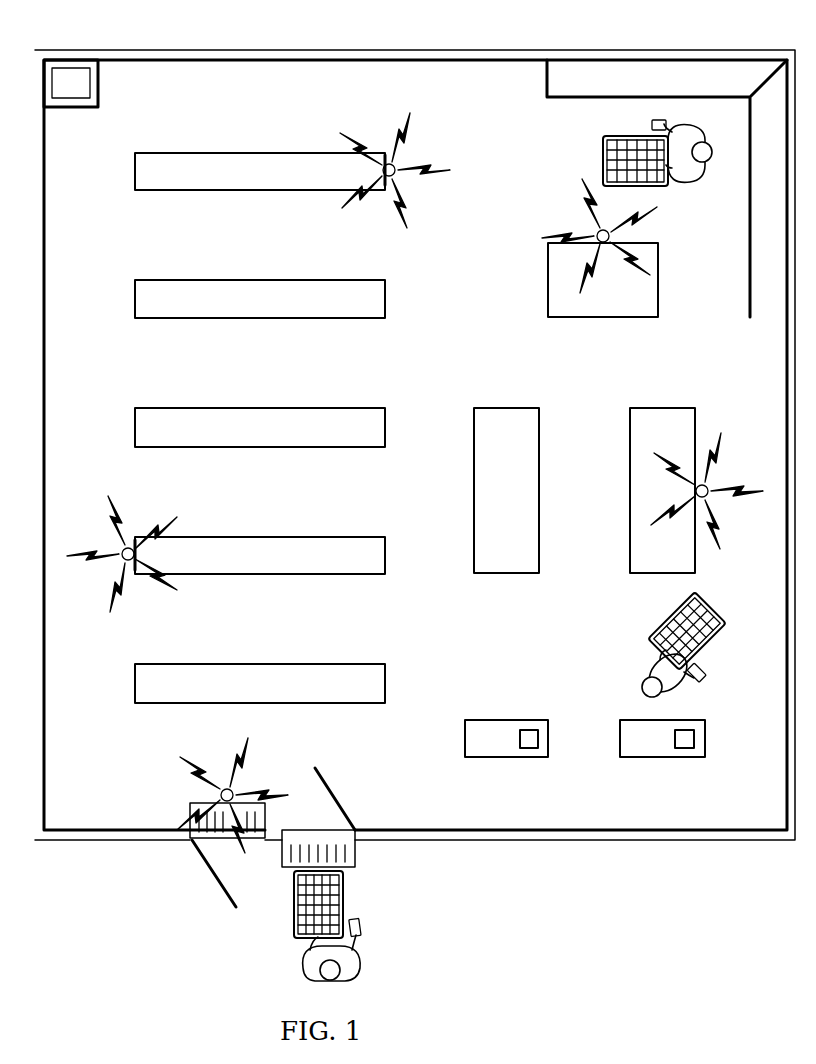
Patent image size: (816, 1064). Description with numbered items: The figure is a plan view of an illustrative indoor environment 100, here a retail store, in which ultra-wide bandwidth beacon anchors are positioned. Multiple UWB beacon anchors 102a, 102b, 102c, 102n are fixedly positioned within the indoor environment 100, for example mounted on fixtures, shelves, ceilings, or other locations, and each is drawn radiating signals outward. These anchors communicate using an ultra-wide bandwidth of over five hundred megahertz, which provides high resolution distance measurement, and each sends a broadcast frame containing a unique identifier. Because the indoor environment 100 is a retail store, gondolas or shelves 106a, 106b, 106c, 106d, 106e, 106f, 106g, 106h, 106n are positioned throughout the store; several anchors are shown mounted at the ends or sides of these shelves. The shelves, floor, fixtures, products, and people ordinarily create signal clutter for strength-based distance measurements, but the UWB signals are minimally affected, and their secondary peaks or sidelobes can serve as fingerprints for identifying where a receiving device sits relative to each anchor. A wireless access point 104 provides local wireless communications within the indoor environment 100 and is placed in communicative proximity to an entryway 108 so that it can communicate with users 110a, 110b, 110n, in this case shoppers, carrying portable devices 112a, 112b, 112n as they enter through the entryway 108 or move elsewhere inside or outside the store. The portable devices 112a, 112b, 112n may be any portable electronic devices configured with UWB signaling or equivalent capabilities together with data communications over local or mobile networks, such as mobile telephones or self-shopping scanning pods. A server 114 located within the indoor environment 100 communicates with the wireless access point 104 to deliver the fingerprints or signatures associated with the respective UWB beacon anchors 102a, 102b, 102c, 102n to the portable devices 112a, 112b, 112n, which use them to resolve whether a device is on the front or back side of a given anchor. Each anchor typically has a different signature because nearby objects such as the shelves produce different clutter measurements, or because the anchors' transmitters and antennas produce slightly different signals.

The indoor environment 100 is at (328, 82).
The UWB beacon anchor 102a is at (397, 166).
The UWB beacon anchor 102b is at (597, 231).
The UWB beacon anchor 102c is at (708, 484).
The UWB beacon anchor 102n is at (120, 558).
The wireless access point 104 is at (227, 788).
The shelf 106a is at (259, 158).
The shelf 106b is at (259, 285).
The shelf 106c is at (259, 413).
The shelf 106d is at (259, 542).
The shelf 106e is at (259, 670).
The shelf 106f is at (509, 415).
The shelf 106g is at (665, 415).
The shelf 106h is at (548, 278).
The shelf 106n is at (548, 78).
The entryway 108 is at (350, 766).
The user 110a is at (304, 963).
The user 110b is at (647, 666).
The user 110n is at (690, 177).
The portable device 112a is at (365, 932).
The portable device 112b is at (704, 682).
The portable device 112n is at (652, 126).
The server 114 is at (90, 84).